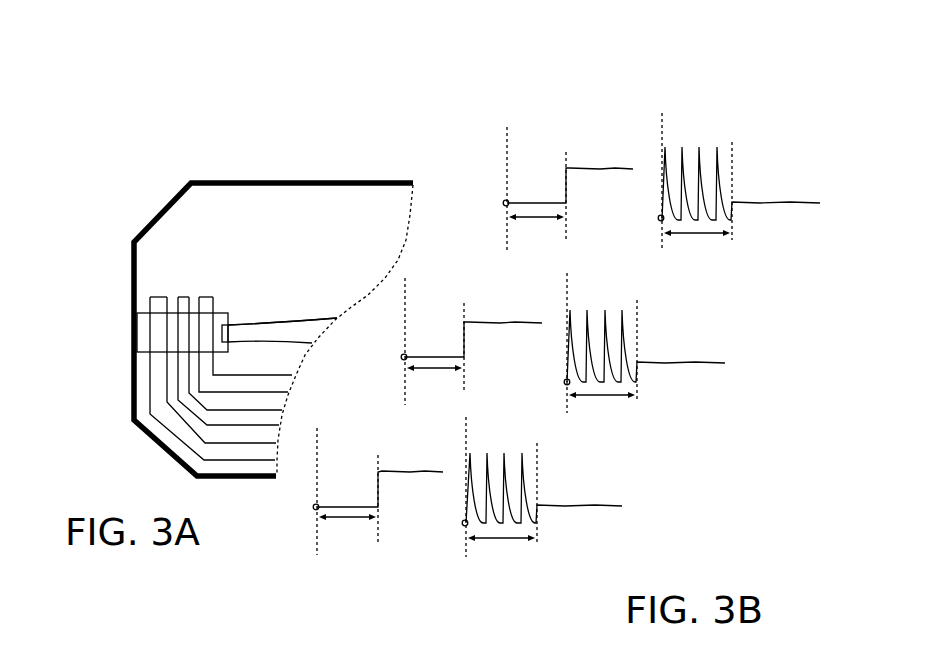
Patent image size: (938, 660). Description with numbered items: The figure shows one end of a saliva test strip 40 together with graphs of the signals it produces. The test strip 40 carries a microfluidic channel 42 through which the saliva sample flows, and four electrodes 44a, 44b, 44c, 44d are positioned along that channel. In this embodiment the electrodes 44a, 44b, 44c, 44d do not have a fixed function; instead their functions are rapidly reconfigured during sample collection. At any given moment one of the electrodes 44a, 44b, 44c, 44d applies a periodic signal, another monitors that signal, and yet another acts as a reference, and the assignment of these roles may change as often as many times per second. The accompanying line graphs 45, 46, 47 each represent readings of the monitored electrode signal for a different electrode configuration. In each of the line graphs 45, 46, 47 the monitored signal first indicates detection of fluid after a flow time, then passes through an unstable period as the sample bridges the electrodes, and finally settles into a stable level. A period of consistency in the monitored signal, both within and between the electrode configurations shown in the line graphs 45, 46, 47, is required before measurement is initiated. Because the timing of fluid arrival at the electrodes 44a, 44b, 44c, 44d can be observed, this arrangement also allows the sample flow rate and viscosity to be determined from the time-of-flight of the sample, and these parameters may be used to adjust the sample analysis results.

In FIG. 3A, the test strip 40 is at (160, 443).
In FIG. 3A, the microfluidic channel 42 is at (138, 358).
In FIG. 3A, the electrode 44a is at (158, 296).
In FIG. 3A, the electrode 44b is at (183, 296).
In FIG. 3A, the electrode 44c is at (205, 296).
In FIG. 3A, the electrode 44d is at (260, 323).
In FIG. 3B, the line graph 45 is at (672, 98).
In FIG. 3B, the line graph 46 is at (674, 336).
In FIG. 3B, the line graph 47 is at (628, 520).